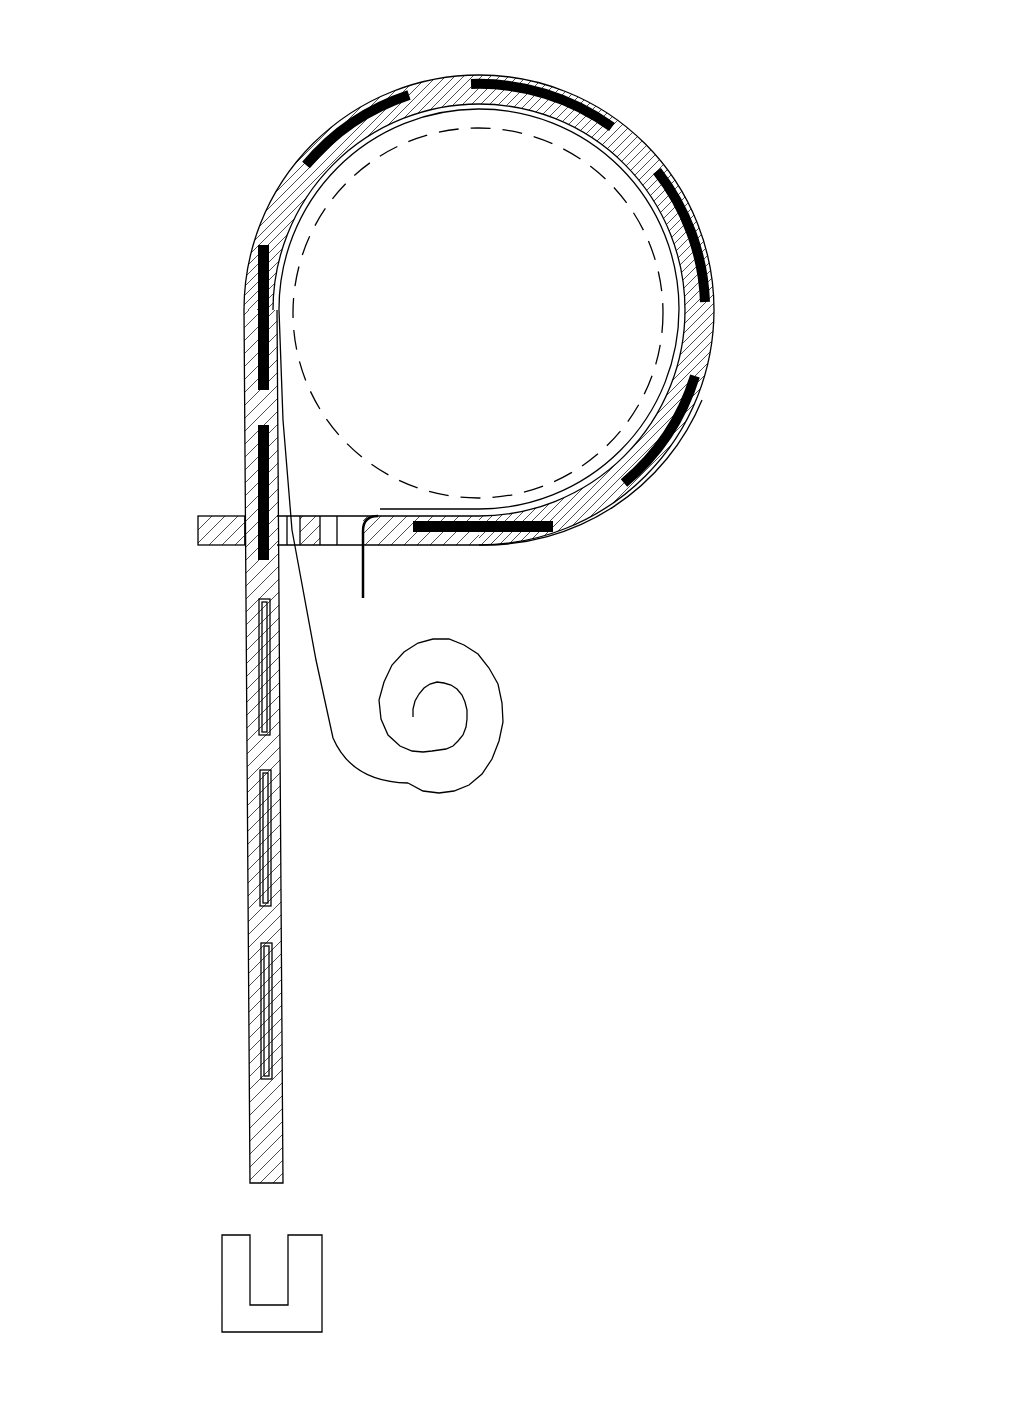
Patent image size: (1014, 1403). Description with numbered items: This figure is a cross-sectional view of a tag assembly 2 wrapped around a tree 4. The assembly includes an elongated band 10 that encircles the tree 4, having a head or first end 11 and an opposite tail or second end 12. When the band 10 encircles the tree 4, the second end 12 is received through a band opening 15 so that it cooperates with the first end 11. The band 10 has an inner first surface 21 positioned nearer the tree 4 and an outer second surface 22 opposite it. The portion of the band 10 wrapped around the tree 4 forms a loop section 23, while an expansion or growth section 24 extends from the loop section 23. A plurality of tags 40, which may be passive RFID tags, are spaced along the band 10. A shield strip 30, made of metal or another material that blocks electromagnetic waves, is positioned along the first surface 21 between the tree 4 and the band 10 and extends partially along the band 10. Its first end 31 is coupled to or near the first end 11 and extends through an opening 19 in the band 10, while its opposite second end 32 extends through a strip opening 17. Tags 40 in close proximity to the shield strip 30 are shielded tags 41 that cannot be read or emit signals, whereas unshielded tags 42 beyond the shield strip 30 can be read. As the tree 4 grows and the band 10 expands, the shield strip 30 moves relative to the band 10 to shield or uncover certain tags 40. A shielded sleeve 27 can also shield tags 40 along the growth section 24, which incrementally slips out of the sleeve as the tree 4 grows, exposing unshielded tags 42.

The tag assembly 2 is at (212, 112).
The tree 4 is at (603, 175).
The band 10 is at (443, 92).
The first end 11 is at (208, 506).
The second end 12 is at (320, 1151).
The band opening 15 is at (246, 550).
The strip opening 17 is at (320, 558).
The opening 19 is at (397, 556).
The first surface 21 is at (338, 130).
The second surface 22 is at (658, 462).
The loop section 23 is at (666, 546).
The growth section 24 is at (183, 897).
The shielded sleeve 27 is at (187, 1253).
The shield strip 30 is at (363, 785).
The first end 31 is at (380, 598).
The second end 32 is at (416, 712).
The tag 40 is at (372, 82).
The shielded tag 41 is at (310, 152).
The unshielded tag 42 is at (266, 712).